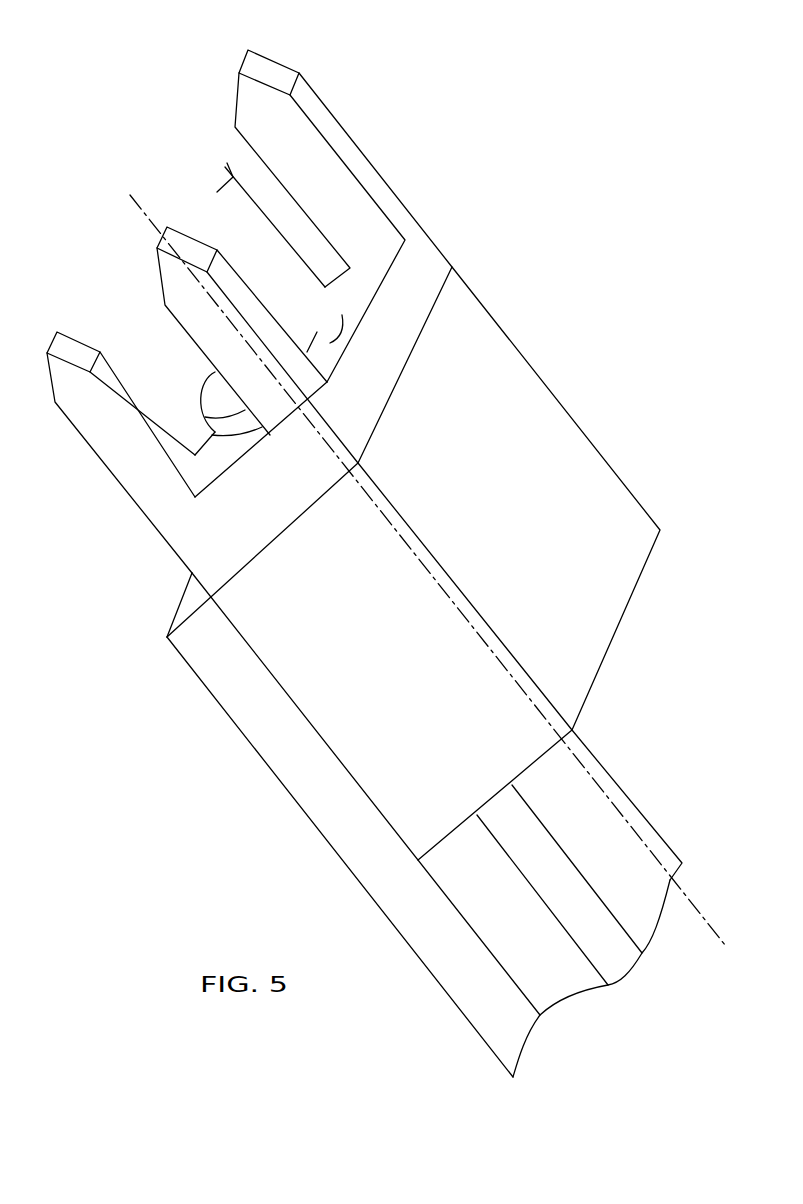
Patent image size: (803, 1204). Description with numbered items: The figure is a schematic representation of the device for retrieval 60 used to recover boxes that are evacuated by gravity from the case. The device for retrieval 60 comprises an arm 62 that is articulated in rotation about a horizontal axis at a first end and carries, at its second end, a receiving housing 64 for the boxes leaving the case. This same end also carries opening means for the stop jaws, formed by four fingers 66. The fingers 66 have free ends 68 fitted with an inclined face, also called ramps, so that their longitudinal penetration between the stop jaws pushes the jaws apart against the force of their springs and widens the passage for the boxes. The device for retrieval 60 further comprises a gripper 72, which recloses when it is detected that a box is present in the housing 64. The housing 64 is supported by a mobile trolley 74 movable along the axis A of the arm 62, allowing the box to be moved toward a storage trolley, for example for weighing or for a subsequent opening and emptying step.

The device for retrieval 60 is at (548, 265).
The arm 62 is at (300, 765).
The receiving housing 64 is at (198, 198).
The fingers 66 is at (122, 442).
The free ends 68 is at (268, 65).
The gripper 72 is at (220, 190).
The mobile trolley 74 is at (585, 475).
The axis A is at (693, 902).